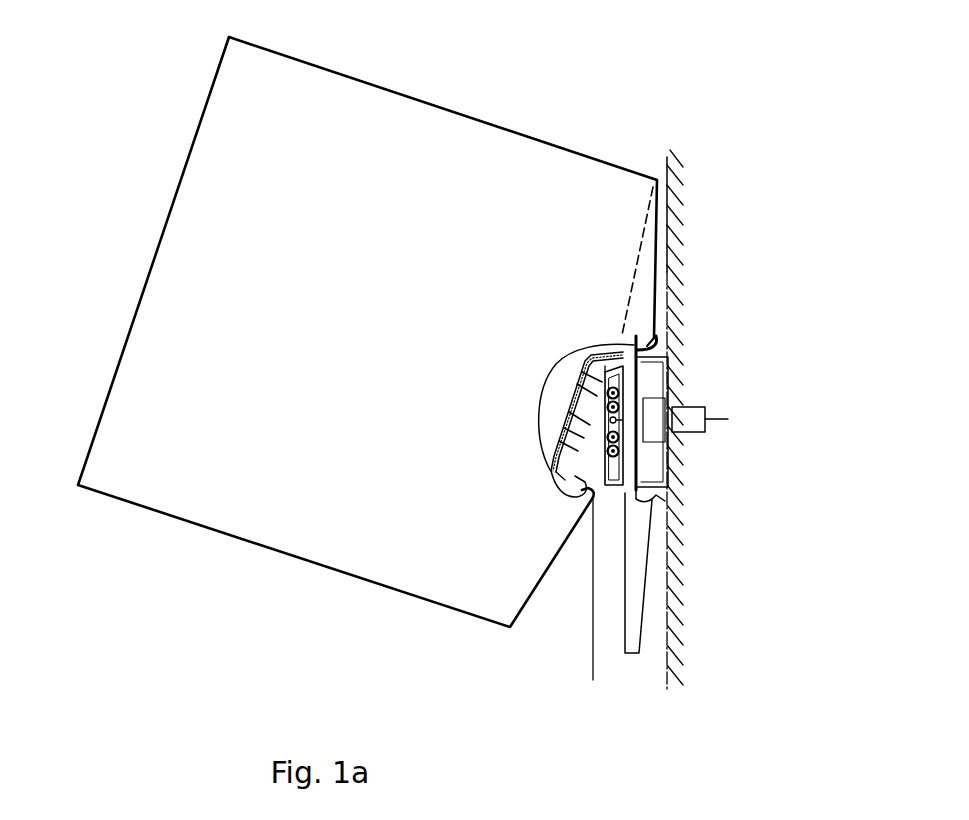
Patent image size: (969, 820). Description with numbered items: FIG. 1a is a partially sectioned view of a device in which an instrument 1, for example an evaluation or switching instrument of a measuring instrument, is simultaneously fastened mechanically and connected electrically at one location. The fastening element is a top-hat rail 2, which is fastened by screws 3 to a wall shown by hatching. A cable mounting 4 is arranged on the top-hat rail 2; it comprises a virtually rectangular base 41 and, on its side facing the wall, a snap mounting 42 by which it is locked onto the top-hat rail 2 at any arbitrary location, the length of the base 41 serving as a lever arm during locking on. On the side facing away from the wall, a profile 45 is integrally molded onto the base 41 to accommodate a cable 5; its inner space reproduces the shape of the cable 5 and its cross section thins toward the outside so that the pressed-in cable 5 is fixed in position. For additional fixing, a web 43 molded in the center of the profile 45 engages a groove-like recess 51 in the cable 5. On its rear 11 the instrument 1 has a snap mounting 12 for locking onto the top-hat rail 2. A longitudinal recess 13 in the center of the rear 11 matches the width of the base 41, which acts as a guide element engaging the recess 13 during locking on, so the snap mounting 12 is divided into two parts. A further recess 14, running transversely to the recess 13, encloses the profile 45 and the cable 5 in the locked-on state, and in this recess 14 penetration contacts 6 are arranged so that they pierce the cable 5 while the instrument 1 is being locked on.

The instrument 1 is at (283, 540).
The top-hat rail 2 is at (640, 447).
The screws 3 is at (620, 416).
The cable mounting 4 is at (634, 662).
The cable 5 is at (620, 432).
The penetration contacts 6 is at (560, 440).
The rear 11 is at (535, 590).
The snap mounting 12 is at (647, 337).
The recess 13 is at (570, 478).
The further recess 14 is at (550, 472).
The base 41 is at (638, 636).
The snap mounting 42 is at (665, 335).
The web 43 is at (620, 420).
The profile 45 is at (656, 337).
The groove-like recess 51 is at (553, 478).